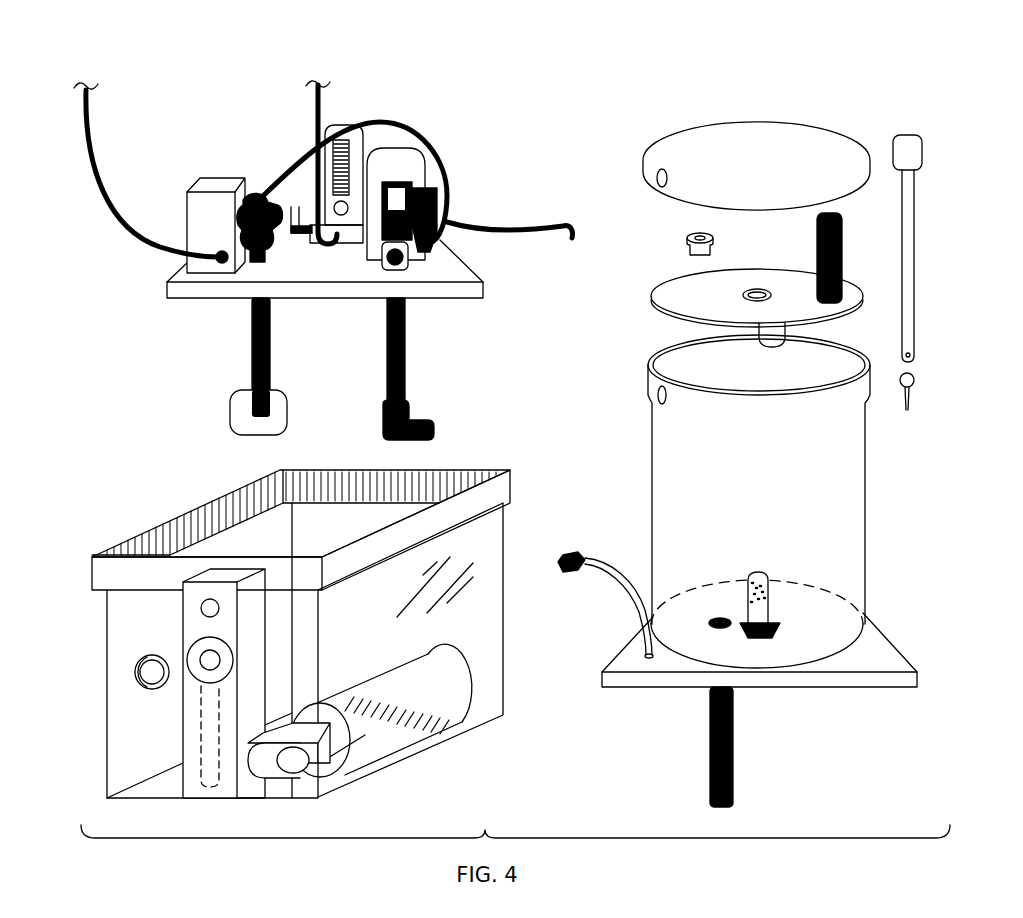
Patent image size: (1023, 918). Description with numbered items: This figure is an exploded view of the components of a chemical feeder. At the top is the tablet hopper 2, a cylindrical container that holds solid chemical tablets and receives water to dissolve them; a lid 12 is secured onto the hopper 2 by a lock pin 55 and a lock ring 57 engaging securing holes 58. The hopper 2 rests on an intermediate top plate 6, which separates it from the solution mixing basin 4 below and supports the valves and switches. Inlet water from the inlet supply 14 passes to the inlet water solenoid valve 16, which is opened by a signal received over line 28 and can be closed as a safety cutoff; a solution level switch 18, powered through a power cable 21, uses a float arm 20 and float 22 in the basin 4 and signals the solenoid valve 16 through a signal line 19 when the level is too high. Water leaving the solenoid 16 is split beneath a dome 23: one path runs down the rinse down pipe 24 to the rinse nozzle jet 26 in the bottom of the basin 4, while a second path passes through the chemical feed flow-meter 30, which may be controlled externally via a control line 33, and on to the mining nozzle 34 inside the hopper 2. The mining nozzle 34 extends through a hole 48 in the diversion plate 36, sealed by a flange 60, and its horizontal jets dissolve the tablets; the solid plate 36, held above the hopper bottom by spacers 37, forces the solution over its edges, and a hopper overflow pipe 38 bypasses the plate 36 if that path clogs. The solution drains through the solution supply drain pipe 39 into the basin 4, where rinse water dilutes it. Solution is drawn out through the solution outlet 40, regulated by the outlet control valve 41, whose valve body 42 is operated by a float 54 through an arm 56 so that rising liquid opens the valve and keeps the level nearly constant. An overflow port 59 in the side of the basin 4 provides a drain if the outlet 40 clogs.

The tablet hopper 2 is at (650, 461).
The solution mixing basin 4 is at (503, 623).
The intermediate top plate 6 is at (440, 270).
The lid 12 is at (755, 122).
The inlet supply 14 is at (382, 265).
The inlet water solenoid valve 16 is at (440, 197).
The solution level switch 18 is at (210, 190).
The signal line 19 is at (420, 137).
The float arm 20 is at (250, 340).
The power cable 21 is at (95, 116).
The float 22 is at (230, 407).
The dome 23 is at (397, 148).
The rinse down pipe 24 is at (406, 350).
The rinse nozzle jet 26 is at (436, 431).
The line 28 is at (532, 226).
The chemical feed flow-meter 30 is at (335, 123).
The control line 33 is at (314, 90).
The mining nozzle 34 is at (757, 572).
The diversion plate 36 is at (652, 296).
The spacers 37 is at (788, 330).
The hopper overflow pipe 38 is at (845, 240).
The solution supply drain pipe 39 is at (722, 615).
The solution outlet 40 is at (208, 672).
The outlet control valve 41 is at (243, 780).
The valve body 42 is at (183, 616).
The hole 48 is at (757, 289).
The float 54 is at (397, 727).
The lock pin 55 is at (925, 149).
The arm 56 is at (297, 762).
The lock ring 57 is at (914, 392).
The securing holes 58 is at (657, 178).
The overflow port 59 is at (135, 677).
The flange 60 is at (688, 238).